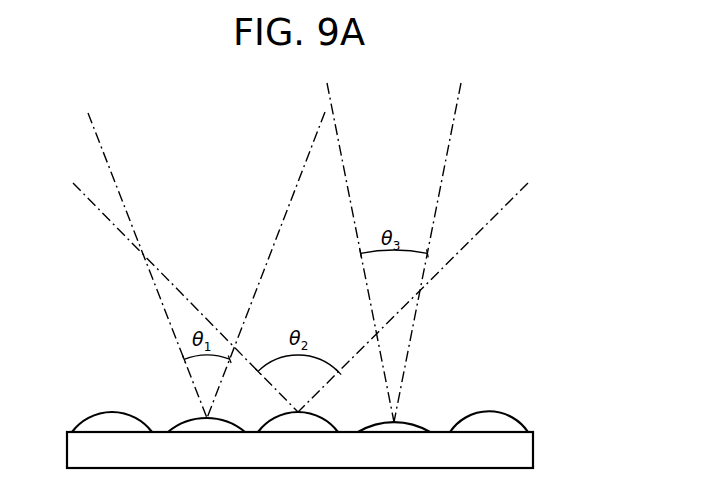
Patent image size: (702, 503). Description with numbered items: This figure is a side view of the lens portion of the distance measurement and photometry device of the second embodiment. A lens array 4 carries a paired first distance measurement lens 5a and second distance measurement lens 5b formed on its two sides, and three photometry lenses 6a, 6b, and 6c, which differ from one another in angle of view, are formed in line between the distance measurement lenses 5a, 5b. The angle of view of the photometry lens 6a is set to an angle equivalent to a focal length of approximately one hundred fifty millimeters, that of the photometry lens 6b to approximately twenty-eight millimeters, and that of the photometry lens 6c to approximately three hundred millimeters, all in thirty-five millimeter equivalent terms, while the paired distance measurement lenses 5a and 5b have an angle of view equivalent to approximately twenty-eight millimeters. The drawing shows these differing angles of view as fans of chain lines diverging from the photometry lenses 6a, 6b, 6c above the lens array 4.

The lens array 4 is at (535, 447).
The first distance measurement lens 5a is at (112, 410).
The second distance measurement lens 5b is at (489, 410).
The photometry lens 6a is at (183, 418).
The photometry lens 6b is at (275, 416).
The photometry lens 6c is at (379, 420).